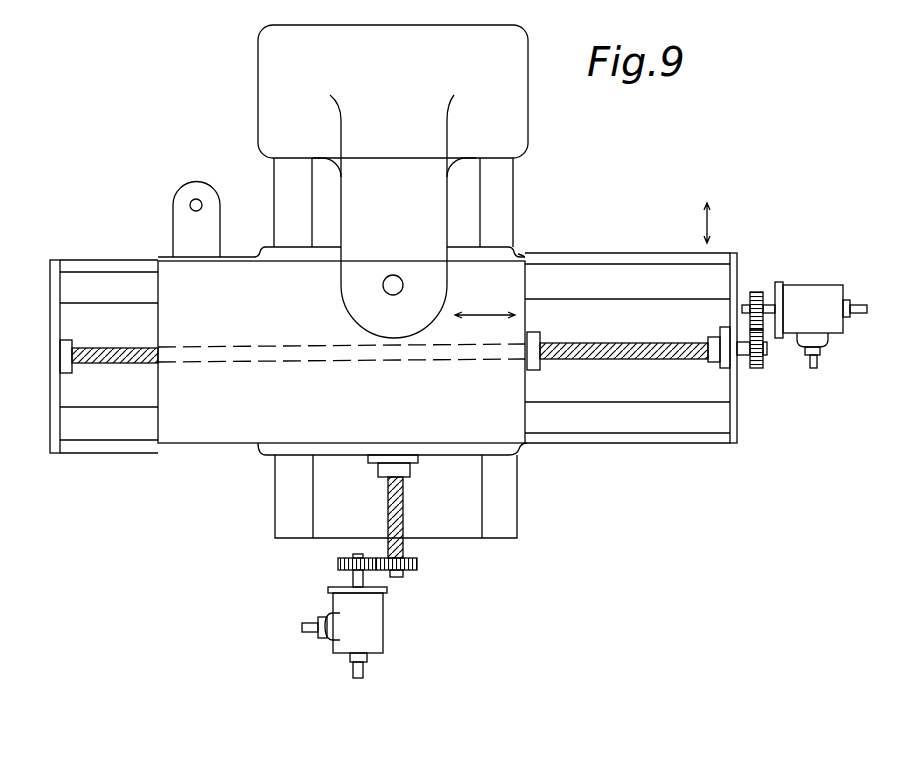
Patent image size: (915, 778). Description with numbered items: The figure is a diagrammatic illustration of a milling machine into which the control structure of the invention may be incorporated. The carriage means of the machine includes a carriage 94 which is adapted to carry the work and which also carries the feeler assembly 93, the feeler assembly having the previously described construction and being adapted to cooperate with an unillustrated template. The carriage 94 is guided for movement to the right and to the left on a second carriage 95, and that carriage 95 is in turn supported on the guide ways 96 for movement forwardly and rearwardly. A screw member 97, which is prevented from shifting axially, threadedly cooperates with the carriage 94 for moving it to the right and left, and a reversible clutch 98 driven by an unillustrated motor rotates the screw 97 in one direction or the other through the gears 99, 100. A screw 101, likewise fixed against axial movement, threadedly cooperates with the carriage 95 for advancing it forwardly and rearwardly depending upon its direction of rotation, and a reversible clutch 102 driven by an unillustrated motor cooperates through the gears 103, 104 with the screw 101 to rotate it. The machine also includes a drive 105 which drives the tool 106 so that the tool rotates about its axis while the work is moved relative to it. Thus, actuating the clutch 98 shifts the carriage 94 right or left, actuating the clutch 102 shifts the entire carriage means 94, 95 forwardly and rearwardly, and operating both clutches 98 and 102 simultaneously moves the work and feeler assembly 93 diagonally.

The feeler assembly 93 is at (188, 190).
The carriage 94 is at (193, 433).
The carriage 95 is at (618, 268).
The guide ways 96 is at (505, 495).
The screw member 97 is at (648, 356).
The reversible clutch 98 is at (836, 292).
The gear 99 is at (755, 292).
The gear 100 is at (757, 370).
The screw 101 is at (397, 510).
The reversible clutch 102 is at (375, 640).
The gear 103 is at (418, 565).
The gear 104 is at (337, 565).
The drive 105 is at (272, 67).
The tool 106 is at (394, 275).